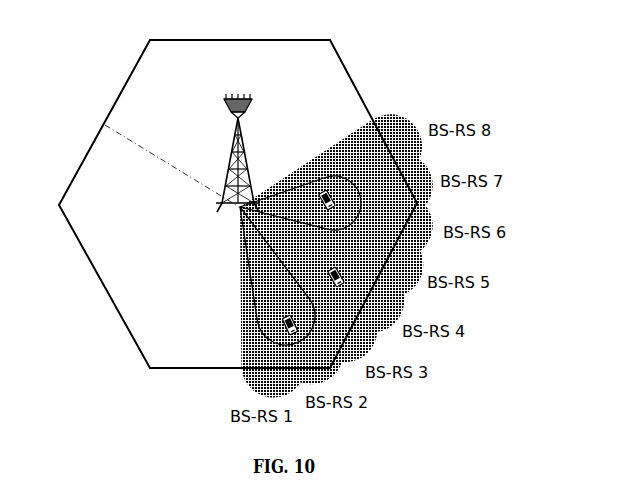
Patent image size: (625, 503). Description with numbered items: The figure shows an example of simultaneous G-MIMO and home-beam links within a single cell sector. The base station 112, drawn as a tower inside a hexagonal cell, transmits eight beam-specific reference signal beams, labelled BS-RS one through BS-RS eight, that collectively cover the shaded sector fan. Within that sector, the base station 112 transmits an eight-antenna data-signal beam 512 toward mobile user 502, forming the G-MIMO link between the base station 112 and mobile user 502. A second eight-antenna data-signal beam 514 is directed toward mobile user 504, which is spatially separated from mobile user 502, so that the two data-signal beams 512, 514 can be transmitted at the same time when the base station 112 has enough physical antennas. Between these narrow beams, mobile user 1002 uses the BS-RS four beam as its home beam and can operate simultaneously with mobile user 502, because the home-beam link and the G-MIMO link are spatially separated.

The base station 112 is at (238, 143).
The mobile user 502 is at (277, 276).
The mobile user 504 is at (300, 203).
The data-signal beam 512 is at (233, 285).
The data-signal beam 514 is at (296, 170).
The mobile user 1002 is at (321, 267).